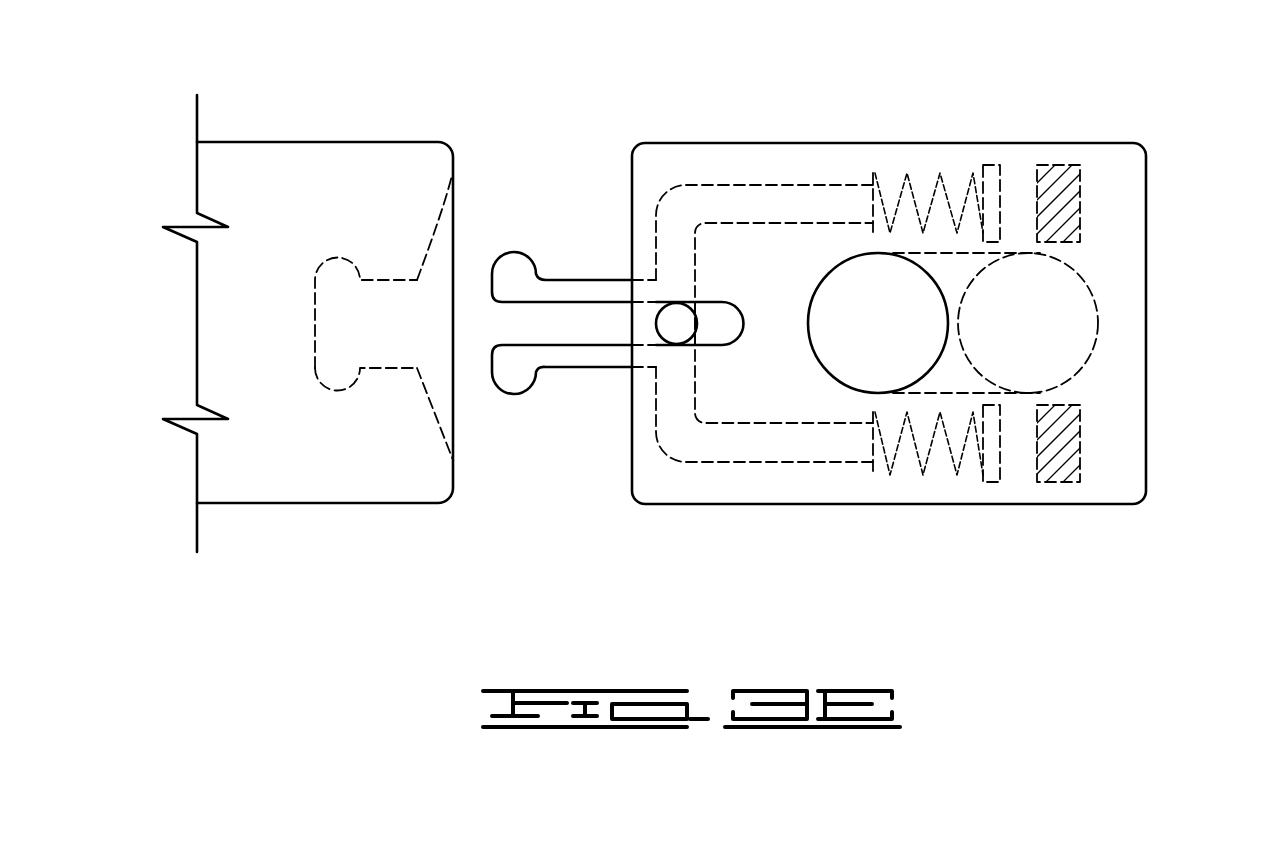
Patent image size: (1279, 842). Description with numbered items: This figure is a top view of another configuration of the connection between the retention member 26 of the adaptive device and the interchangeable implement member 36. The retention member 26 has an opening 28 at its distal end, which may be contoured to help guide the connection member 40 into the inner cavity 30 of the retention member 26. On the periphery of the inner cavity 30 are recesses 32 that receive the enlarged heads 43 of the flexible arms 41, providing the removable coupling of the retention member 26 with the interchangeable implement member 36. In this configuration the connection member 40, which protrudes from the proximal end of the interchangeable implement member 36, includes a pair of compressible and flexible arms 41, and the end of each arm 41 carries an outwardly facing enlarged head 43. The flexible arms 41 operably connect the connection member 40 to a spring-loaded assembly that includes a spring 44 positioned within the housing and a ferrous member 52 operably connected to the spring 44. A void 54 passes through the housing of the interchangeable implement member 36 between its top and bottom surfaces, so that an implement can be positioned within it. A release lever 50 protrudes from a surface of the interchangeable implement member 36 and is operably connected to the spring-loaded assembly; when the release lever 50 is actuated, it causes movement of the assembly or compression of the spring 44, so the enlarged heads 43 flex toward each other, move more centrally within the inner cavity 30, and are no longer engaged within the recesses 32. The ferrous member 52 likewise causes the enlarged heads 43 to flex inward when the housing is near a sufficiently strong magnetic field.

The retention member 26 is at (356, 345).
The opening 28 is at (453, 170).
The inner cavity 30 is at (387, 280).
The recesses 32 is at (337, 391).
The interchangeable implement member 36 is at (935, 358).
The connection member 40 is at (574, 286).
The flexible arms 41 is at (587, 280).
The enlarged heads 43 is at (513, 395).
The spring 44 is at (905, 180).
The release lever 50 is at (675, 313).
The ferrous member 52 is at (1078, 212).
The void 54 is at (822, 360).